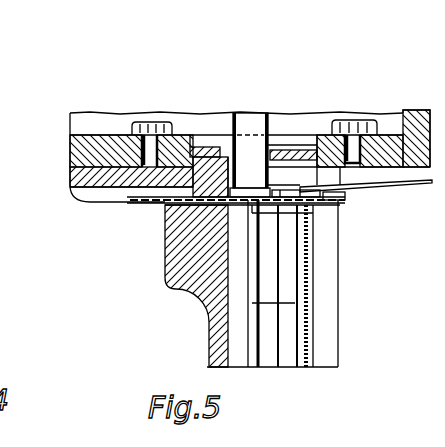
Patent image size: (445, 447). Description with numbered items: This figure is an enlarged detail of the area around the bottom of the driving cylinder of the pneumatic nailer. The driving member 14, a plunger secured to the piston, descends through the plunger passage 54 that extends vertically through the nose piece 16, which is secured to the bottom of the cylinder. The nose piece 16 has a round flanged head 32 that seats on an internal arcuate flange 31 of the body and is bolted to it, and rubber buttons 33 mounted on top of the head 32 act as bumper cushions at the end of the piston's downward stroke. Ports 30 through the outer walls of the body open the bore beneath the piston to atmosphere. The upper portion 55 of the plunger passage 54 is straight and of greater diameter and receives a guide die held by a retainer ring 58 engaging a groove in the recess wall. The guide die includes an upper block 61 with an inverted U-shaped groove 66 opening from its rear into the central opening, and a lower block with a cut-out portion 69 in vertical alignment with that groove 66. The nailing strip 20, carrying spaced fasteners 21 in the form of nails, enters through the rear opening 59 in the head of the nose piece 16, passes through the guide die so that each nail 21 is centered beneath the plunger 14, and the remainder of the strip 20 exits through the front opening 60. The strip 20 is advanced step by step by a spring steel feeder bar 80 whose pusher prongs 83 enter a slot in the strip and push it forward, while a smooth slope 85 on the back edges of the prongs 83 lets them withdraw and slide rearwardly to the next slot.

The driving member 14 is at (258, 123).
The nose piece 16 is at (188, 292).
The strip 20 is at (140, 203).
The fasteners 21 is at (300, 317).
The ports 30 is at (82, 128).
The internal arcuate flange 31 is at (97, 193).
The round flanged head 32 is at (100, 155).
The rubber buttons 33 is at (155, 124).
The plunger passage 54 is at (233, 339).
The upper portion 55 is at (353, 136).
The retainer ring 58 is at (202, 148).
The rear opening 59 is at (326, 209).
The front opening 60 is at (172, 204).
The upper block 61 is at (216, 160).
The inverted U-shaped groove 66 is at (290, 178).
The cut-out portion 69 is at (210, 256).
The feeder bar 80 is at (375, 187).
The pusher prongs 83 is at (282, 200).
The smooth slope 85 is at (285, 195).